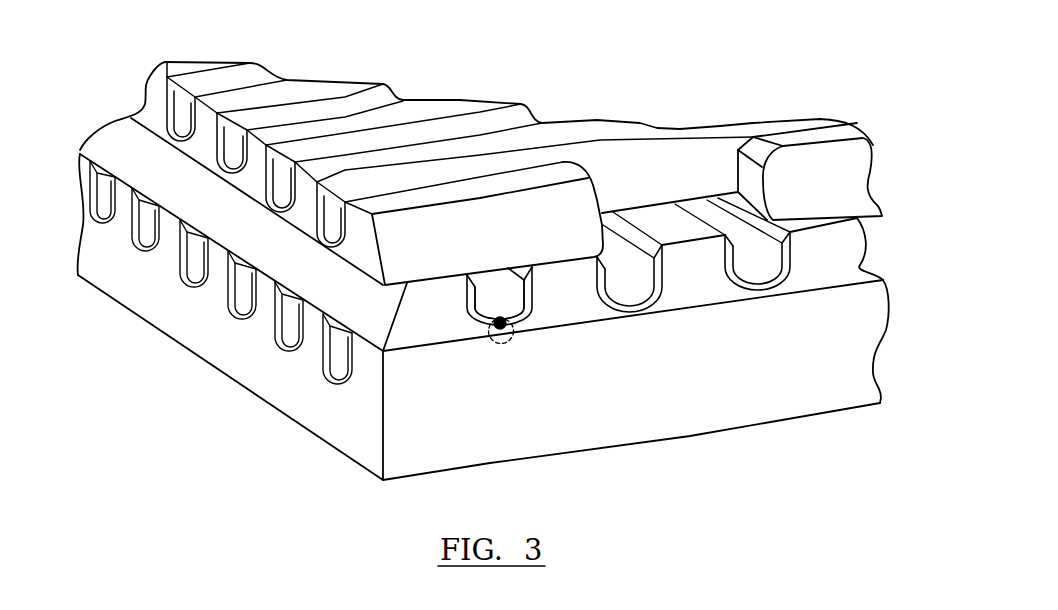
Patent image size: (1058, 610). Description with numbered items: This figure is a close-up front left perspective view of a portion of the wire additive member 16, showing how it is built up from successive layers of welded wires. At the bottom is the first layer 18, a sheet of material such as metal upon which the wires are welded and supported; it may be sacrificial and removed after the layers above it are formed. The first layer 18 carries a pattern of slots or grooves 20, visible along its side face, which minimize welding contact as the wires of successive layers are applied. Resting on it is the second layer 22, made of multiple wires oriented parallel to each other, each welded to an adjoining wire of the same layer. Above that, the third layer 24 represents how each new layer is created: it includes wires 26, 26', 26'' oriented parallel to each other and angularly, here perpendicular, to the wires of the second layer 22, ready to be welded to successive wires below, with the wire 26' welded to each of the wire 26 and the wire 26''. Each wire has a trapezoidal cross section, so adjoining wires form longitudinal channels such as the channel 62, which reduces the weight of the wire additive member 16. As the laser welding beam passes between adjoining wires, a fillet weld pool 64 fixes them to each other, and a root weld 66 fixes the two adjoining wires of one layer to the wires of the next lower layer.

The wire additive member 16 is at (499, 292).
The first layer 18 is at (487, 447).
The slots or grooves 20 is at (243, 294).
The second layer 22 is at (880, 215).
The third layer 24 is at (880, 136).
The wire 26 is at (479, 389).
The wire 26' is at (649, 362).
The wire 26'' is at (775, 344).
The channel 62 is at (522, 296).
The fillet weld pool 64 is at (505, 292).
The root weld 66 is at (502, 345).